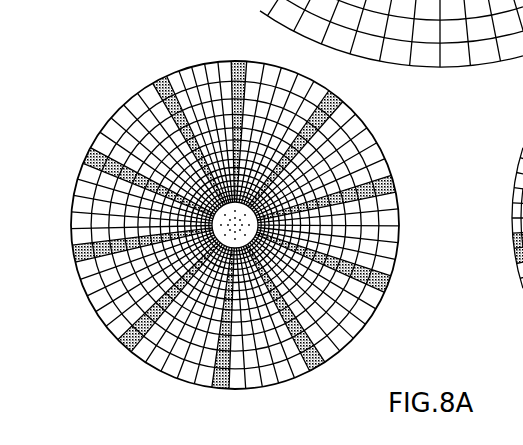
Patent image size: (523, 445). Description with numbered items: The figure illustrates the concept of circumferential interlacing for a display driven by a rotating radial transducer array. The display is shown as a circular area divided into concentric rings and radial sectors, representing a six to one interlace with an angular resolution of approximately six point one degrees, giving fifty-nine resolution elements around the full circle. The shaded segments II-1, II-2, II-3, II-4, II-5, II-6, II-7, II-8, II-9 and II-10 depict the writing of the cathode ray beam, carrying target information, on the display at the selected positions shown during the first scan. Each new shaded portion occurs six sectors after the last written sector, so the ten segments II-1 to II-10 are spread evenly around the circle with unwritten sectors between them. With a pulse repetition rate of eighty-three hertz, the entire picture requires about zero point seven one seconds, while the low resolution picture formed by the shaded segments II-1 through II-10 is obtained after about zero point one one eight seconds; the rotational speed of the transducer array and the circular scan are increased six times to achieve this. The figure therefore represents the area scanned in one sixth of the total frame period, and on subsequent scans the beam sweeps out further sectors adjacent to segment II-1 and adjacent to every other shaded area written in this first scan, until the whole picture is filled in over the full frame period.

The shaded segment II-1 is at (240, 62).
The shaded segment II-2 is at (334, 101).
The shaded segment II-3 is at (392, 182).
The shaded segment II-4 is at (387, 288).
The shaded segment II-5 is at (318, 367).
The shaded segment II-6 is at (222, 390).
The shaded segment II-7 is at (126, 346).
The shaded segment II-8 is at (73, 256).
The shaded segment II-9 is at (88, 157).
The shaded segment II-10 is at (160, 82).